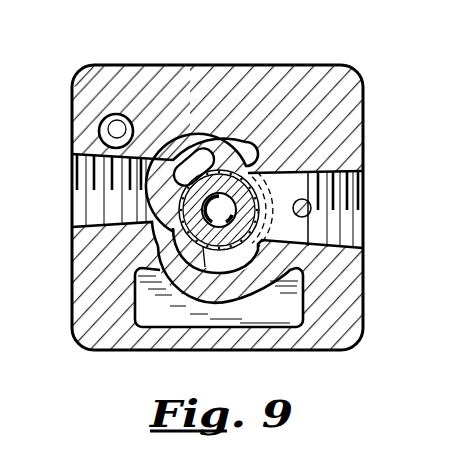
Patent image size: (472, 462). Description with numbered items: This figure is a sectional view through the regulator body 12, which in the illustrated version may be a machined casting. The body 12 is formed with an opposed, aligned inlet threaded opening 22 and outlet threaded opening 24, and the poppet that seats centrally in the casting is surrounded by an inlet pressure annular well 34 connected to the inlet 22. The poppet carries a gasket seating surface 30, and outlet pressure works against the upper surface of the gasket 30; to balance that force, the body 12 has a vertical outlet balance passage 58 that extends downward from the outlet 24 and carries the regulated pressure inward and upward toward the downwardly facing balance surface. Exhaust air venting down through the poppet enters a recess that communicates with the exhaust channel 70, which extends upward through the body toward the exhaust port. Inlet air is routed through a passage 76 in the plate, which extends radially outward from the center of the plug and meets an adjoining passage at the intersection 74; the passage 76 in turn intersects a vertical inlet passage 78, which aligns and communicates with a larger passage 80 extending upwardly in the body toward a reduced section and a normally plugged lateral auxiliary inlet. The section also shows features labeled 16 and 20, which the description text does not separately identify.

The body 12 is at (372, 80).
The bearing 16 is at (262, 192).
The shaft 20 is at (222, 222).
The inlet threaded opening 22 is at (108, 207).
The outlet threaded opening 24 is at (345, 226).
The gasket seating surface 30 is at (130, 248).
The inlet pressure annular well 34 is at (246, 152).
The vertical outlet balance passage 58 is at (306, 204).
The exhaust channel 70 is at (254, 311).
The intersection 74 is at (216, 152).
The passage 76 is at (158, 140).
The vertical inlet passage 78 is at (100, 131).
The larger passage 80 is at (112, 127).